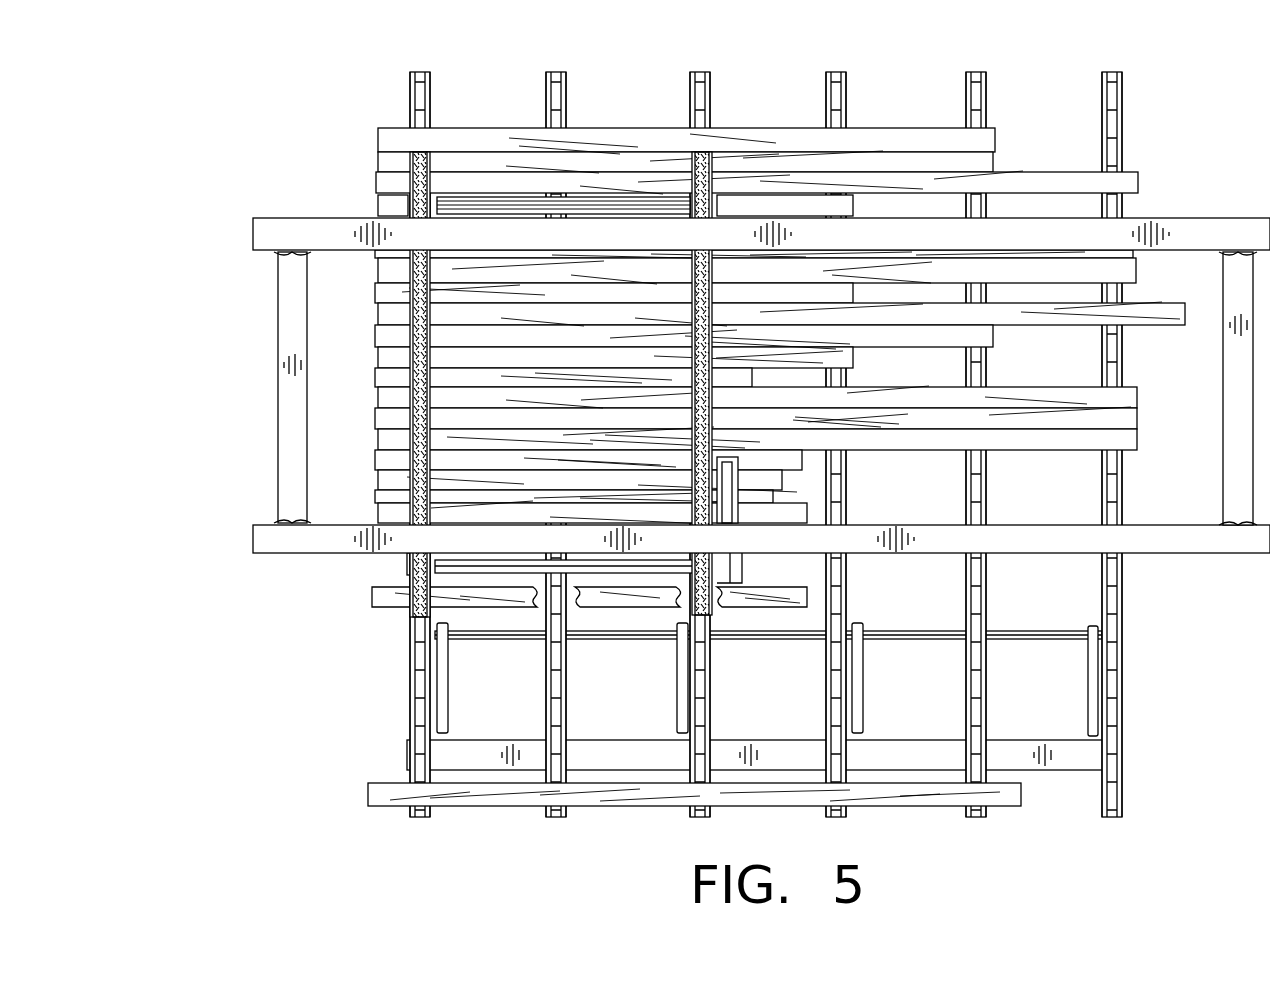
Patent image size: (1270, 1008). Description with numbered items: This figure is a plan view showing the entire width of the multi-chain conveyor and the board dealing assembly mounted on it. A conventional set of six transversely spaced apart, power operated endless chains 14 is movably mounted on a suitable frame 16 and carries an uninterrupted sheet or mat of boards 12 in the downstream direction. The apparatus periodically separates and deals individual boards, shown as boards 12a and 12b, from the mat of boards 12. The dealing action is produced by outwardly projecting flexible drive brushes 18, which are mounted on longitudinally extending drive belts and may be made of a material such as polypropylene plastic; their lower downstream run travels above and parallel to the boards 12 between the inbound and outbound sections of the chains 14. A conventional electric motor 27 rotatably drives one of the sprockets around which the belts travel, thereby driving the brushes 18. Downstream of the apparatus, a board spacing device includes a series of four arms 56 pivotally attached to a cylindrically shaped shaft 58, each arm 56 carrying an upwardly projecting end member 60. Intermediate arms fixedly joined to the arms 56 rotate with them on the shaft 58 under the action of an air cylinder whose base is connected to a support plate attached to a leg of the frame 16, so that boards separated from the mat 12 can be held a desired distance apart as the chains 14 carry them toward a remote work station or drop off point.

The mat of boards 12 is at (375, 478).
The individual board 12a is at (375, 793).
The individual board 12b is at (375, 597).
The endless chains 14 is at (556, 72).
The frame 16 is at (862, 541).
The drive brushes 18 is at (715, 163).
The electric motor 27 is at (740, 562).
The arms 56 is at (445, 683).
The shaft 58 is at (1003, 636).
The end member 60 is at (855, 730).